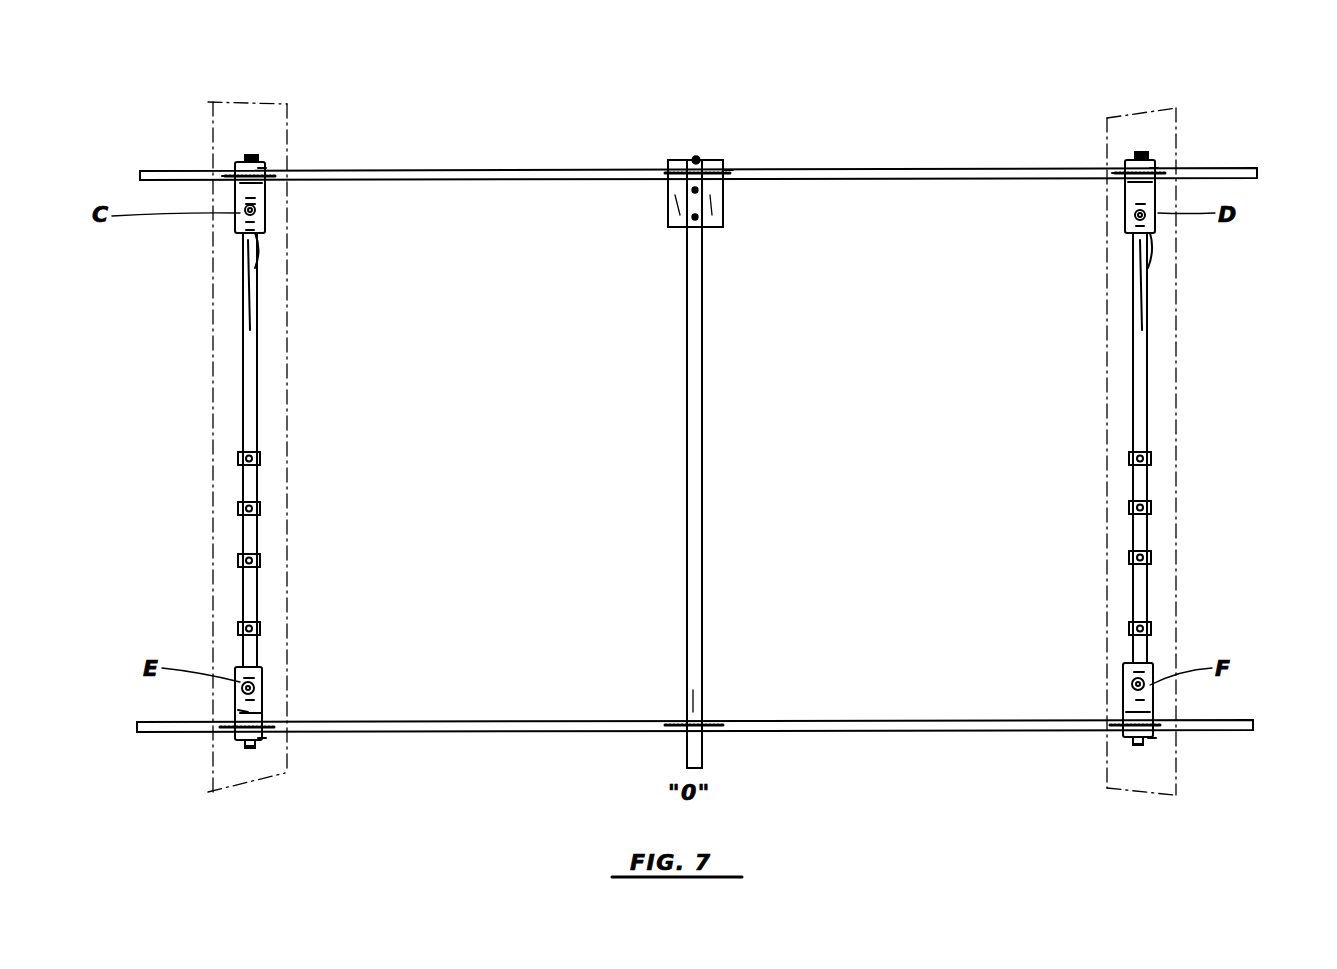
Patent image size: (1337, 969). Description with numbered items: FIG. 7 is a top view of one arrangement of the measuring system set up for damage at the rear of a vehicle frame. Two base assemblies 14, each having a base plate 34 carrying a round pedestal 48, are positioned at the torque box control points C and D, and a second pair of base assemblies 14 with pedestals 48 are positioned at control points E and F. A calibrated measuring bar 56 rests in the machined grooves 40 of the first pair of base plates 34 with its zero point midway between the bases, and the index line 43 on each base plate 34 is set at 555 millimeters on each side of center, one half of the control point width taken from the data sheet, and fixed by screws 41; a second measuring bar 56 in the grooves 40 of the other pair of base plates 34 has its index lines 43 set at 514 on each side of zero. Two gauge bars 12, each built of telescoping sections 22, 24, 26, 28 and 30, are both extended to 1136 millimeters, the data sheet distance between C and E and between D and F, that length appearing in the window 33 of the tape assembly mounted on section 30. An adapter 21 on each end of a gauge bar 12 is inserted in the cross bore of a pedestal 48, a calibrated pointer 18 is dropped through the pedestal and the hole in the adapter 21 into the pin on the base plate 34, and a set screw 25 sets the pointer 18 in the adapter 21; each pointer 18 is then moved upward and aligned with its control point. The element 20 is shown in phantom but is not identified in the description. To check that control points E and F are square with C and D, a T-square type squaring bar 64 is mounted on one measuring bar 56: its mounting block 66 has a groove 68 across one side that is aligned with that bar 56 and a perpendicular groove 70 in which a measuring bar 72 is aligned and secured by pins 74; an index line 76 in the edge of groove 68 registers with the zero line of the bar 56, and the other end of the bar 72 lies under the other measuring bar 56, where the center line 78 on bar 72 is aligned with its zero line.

The gauge bar 12 is at (263, 415).
The base assembly 14 is at (232, 148).
The calibrated pointer 18 is at (243, 208).
The phantom frame 20 is at (213, 305).
The adapter 21 is at (268, 213).
The telescoping section 22 is at (258, 645).
The telescoping section 24 is at (258, 585).
The set screw 25 is at (270, 185).
The telescoping section 26 is at (258, 527).
The telescoping section 28 is at (258, 482).
The telescoping section 30 is at (258, 347).
The window 33 is at (268, 233).
The base plate 34 is at (236, 712).
The groove 40 is at (228, 173).
The screw 41 is at (262, 160).
The index line 43 is at (268, 168).
The pedestal 48 is at (242, 226).
The calibrated measuring bar 56 is at (506, 171).
The squaring bar 64 is at (728, 236).
The mounting block 66 is at (725, 220).
The groove 68 is at (728, 170).
The groove 70 is at (705, 200).
The measuring bar 72 is at (702, 347).
The pin 74 is at (692, 217).
The index line 76 is at (696, 158).
The center line 78 is at (700, 695).
The index line setting of 514 millimeters 514 is at (697, 775).
The index line setting of 555 millimeters 555 is at (643, 136).
The gauge bar setting of 1136 millimeters 1136 is at (688, 450).